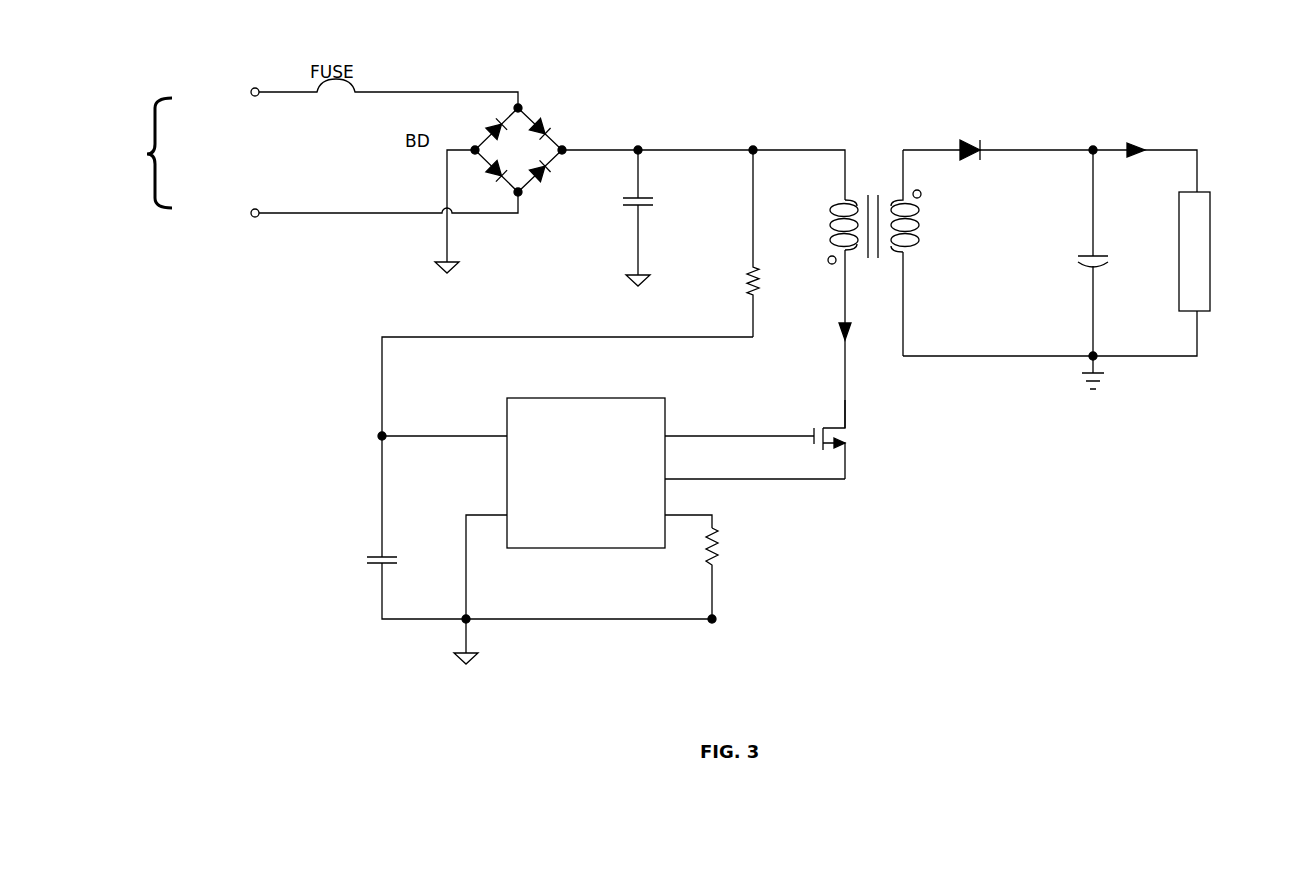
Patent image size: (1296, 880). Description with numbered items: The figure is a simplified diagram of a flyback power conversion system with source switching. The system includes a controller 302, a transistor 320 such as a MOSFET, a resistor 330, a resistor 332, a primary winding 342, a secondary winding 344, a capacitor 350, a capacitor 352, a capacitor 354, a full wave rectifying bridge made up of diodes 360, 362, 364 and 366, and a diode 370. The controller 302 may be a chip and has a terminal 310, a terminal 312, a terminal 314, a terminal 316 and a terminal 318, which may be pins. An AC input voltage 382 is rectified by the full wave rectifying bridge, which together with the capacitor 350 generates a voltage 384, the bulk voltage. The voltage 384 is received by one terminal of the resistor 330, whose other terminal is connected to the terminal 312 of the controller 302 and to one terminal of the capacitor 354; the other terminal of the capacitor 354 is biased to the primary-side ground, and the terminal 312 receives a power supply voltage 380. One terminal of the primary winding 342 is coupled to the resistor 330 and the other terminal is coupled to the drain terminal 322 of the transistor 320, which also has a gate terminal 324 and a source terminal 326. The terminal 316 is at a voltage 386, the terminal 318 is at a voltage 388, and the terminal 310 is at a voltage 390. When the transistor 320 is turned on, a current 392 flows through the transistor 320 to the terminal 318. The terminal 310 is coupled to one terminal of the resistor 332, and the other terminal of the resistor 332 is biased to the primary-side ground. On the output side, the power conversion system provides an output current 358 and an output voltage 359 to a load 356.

The controller 302 is at (560, 548).
The terminal 310 is at (667, 517).
The terminal 312 is at (506, 438).
The terminal 314 is at (506, 517).
The terminal 316 is at (668, 434).
The terminal 318 is at (668, 478).
The transistor 320 is at (837, 438).
The drain terminal 322 is at (846, 408).
The gate terminal 324 is at (805, 438).
The source terminal 326 is at (846, 445).
The resistor 330 is at (755, 296).
The resistor 332 is at (716, 545).
The primary winding 342 is at (852, 257).
The secondary winding 344 is at (874, 289).
The capacitor 350 is at (645, 206).
The capacitor 352 is at (1095, 256).
The capacitor 354 is at (380, 555).
The load 356 is at (1210, 196).
The output current 358 is at (1120, 149).
The output voltage 359 is at (1094, 147).
The diode 360 is at (494, 174).
The diode 362 is at (487, 125).
The diode 364 is at (546, 134).
The diode 366 is at (545, 176).
The diode 370 is at (964, 160).
The power supply voltage 380 is at (416, 436).
The AC input voltage 382 is at (182, 154).
The voltage 384 is at (756, 153).
The voltage 386 is at (747, 435).
The voltage 388 is at (840, 481).
The voltage 390 is at (713, 520).
The current 392 is at (848, 316).